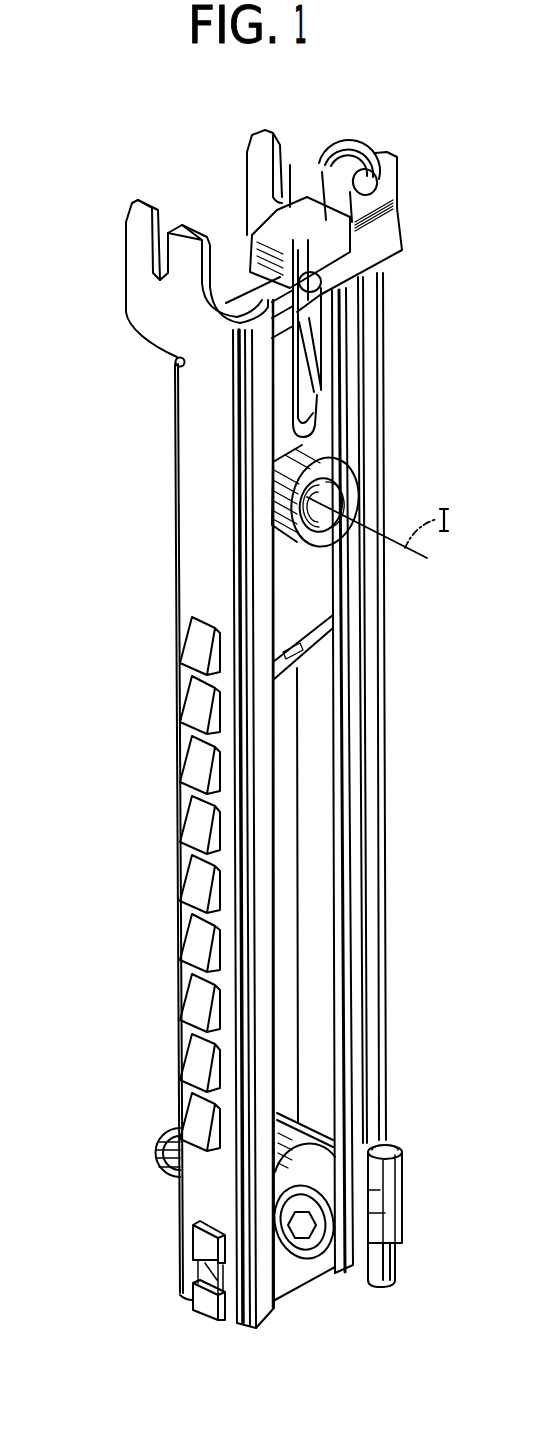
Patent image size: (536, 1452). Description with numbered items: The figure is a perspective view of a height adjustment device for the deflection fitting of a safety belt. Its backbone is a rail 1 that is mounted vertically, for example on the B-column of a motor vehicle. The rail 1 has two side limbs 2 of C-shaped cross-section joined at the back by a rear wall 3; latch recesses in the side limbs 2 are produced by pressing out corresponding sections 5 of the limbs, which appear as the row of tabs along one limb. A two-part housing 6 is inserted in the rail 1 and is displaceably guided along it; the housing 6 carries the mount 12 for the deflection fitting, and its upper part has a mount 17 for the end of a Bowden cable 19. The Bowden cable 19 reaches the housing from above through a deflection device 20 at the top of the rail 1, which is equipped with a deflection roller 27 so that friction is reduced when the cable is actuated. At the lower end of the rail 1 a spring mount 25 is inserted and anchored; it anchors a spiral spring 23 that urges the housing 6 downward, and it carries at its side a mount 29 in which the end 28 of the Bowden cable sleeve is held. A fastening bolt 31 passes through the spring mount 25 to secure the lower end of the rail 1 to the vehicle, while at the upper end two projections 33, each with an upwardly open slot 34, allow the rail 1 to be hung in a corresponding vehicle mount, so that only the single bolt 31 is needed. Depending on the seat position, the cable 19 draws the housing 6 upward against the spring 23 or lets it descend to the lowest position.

The rail 1 is at (350, 603).
The side limbs 2 is at (198, 518).
The rear wall 3 is at (280, 958).
The pressed-out sections 5 is at (192, 708).
The two-part housing 6 is at (307, 623).
The mount for a deflection fitting 12 is at (340, 460).
The mount for the end of the Bowden cable 17 is at (318, 397).
The Bowden cable 19 is at (380, 738).
The deflection device 20 is at (382, 190).
The spiral spring 23 is at (313, 870).
The spring mount 25 is at (318, 1263).
The deflection roller 27 is at (360, 155).
The end of the sleeve of the Bowden cable 28 is at (395, 1263).
The mount for the sleeve end 29 is at (393, 1180).
The fastening bolt 31 is at (163, 1177).
The projections 33 is at (257, 162).
The upwardly open slot 34 is at (137, 268).